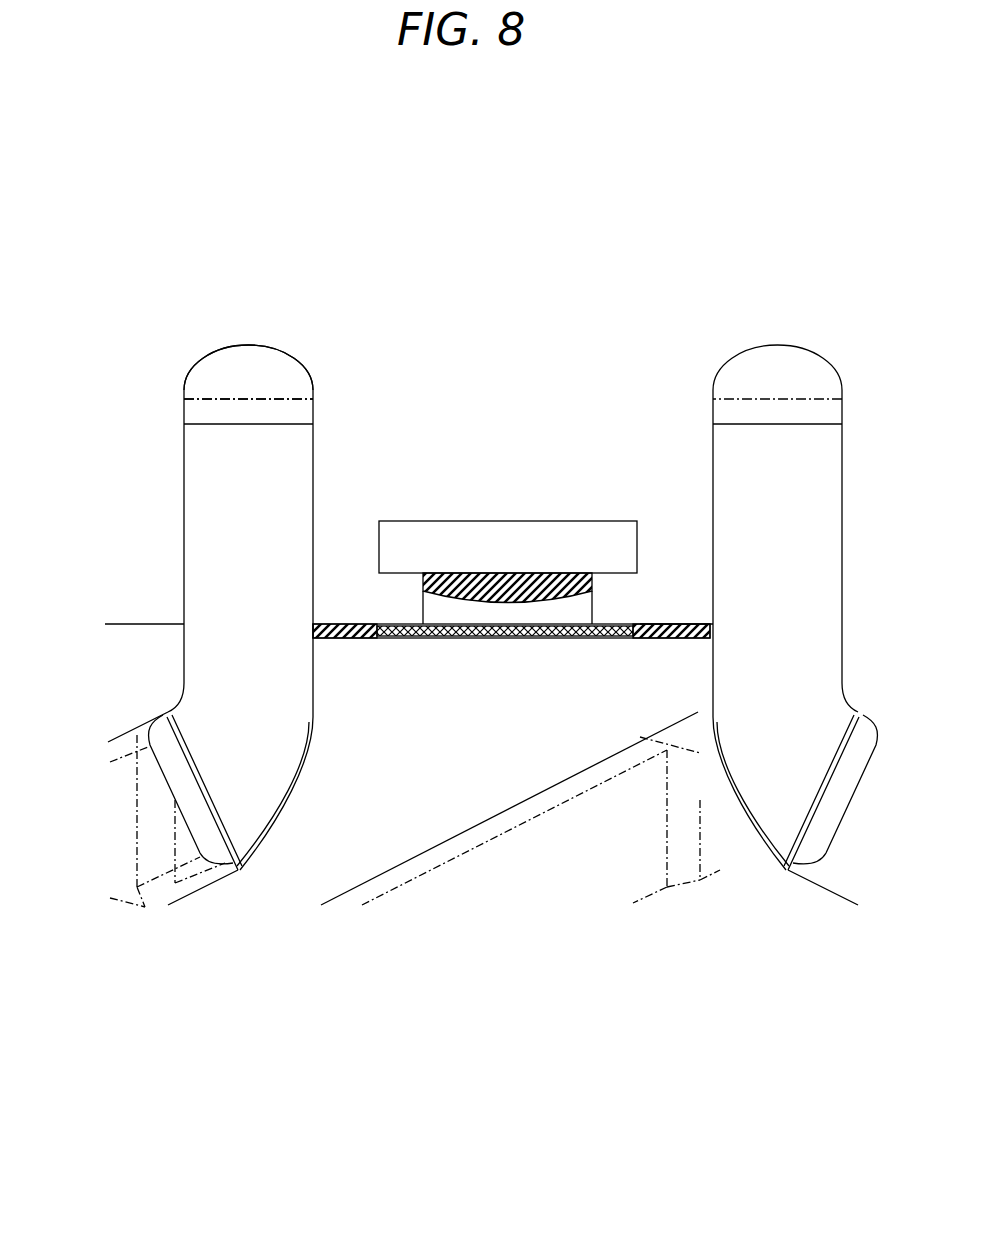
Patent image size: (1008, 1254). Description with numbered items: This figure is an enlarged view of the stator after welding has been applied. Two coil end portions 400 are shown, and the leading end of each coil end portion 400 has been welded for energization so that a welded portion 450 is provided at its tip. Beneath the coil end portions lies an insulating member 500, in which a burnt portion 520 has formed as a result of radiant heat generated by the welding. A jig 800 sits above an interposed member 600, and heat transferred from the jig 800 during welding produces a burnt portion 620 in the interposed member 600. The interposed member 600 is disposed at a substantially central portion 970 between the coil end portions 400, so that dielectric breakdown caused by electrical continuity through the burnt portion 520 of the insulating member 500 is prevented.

The coil end portion 400 is at (236, 734).
The welded portion 450 is at (208, 358).
The insulating member 500 is at (373, 803).
The burnt portion 520 is at (581, 842).
The interposed member 600 is at (460, 598).
The burnt portion 620 is at (568, 549).
The jig 800 is at (521, 514).
The substantially central portion 970 is at (568, 654).